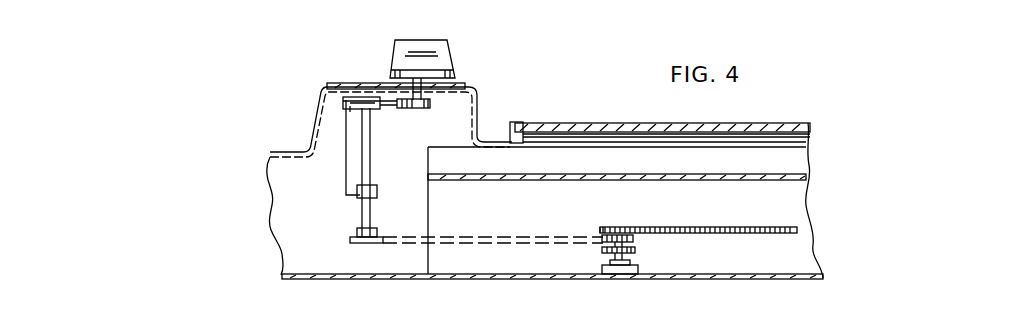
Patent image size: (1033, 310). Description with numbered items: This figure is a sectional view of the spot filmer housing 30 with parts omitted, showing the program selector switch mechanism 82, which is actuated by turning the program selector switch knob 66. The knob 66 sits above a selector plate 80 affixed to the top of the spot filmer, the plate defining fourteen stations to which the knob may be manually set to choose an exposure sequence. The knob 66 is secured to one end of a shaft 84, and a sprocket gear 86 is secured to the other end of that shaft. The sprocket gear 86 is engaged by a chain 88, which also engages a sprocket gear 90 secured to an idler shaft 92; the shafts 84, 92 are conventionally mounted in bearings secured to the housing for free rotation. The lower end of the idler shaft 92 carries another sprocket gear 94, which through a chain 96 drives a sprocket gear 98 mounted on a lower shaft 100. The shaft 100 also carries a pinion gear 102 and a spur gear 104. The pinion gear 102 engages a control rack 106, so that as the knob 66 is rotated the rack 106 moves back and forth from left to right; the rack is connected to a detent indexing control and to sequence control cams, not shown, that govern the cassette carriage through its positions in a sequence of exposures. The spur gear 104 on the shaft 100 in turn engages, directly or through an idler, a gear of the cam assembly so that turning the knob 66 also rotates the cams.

The housing 30 is at (490, 101).
The program selector switch knob 66 is at (442, 57).
The selector plate 80 is at (352, 83).
The program selector switch mechanism 82 is at (350, 172).
The shaft 84 is at (417, 78).
The sprocket gear 86 is at (425, 108).
The chain 88 is at (388, 108).
The sprocket gear 90 is at (346, 111).
The idler shaft 92 is at (342, 187).
The sprocket gear 94 is at (366, 244).
The chain 96 is at (505, 244).
The sprocket gear 98 is at (602, 238).
The shaft 100 is at (611, 262).
The pinion gear 102 is at (628, 227).
The spur gear 104 is at (637, 250).
The control rack 106 is at (706, 227).